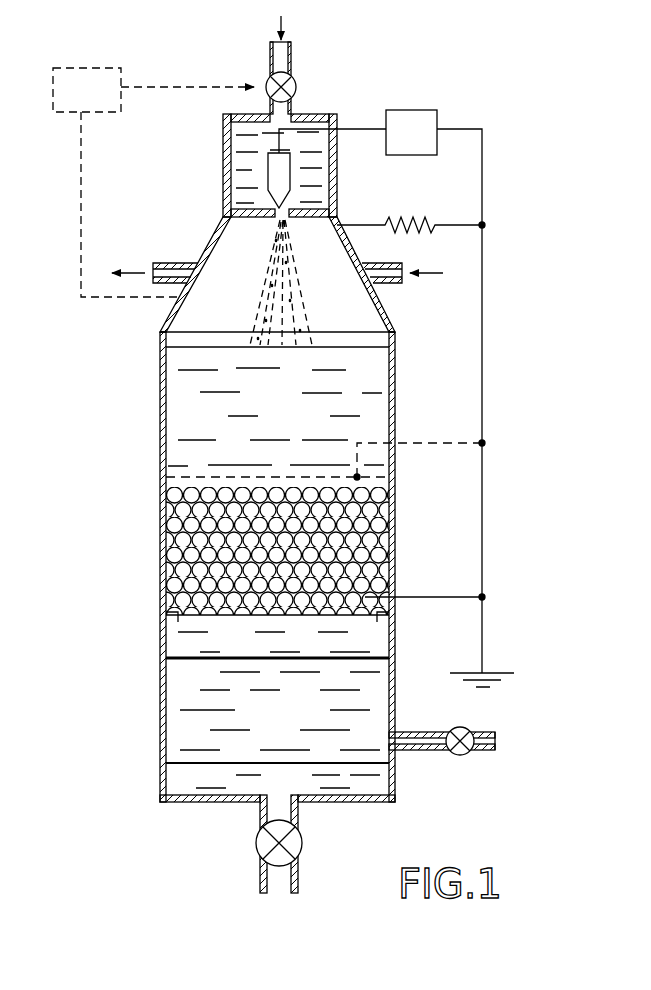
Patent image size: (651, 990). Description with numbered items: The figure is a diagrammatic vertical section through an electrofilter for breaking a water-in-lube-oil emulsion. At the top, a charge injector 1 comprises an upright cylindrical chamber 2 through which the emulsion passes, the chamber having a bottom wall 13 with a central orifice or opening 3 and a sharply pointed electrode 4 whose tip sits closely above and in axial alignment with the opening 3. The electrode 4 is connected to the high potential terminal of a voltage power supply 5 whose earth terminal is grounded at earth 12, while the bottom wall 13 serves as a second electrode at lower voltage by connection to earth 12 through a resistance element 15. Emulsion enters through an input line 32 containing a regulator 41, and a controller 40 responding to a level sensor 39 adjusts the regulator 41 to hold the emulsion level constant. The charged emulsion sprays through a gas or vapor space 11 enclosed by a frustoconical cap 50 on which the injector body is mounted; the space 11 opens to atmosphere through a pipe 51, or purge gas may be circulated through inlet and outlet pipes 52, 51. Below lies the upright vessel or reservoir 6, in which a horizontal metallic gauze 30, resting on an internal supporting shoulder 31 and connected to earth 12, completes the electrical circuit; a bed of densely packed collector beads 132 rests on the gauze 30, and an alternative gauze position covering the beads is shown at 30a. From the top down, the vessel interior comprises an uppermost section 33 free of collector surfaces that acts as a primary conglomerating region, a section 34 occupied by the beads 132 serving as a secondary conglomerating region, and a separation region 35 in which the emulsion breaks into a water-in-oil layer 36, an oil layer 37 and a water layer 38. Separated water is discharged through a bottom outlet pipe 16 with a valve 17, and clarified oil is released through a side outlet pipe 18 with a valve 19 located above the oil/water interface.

The charge injector 1 is at (216, 160).
The chamber 2 is at (228, 221).
The central orifice or opening 3 is at (285, 222).
The pointed electrode 4 is at (286, 183).
The voltage power supply 5 is at (425, 112).
The vessel or reservoir 6 is at (165, 600).
The gas or vapor space 11 is at (349, 317).
The earth 12 is at (497, 668).
The bottom wall 13 is at (256, 222).
The resistance element 15 is at (415, 222).
The outlet pipe 16 is at (258, 810).
The valve 17 is at (300, 850).
The outlet pipe 18 is at (486, 748).
The valve 19 is at (459, 758).
The metallic gauze 30 is at (287, 616).
The gauze electrode alternative location 30a is at (232, 477).
The internal supporting shoulder 31 is at (382, 626).
The input line 32 is at (292, 48).
The uppermost section 33 is at (296, 408).
The section occupied by beads 34 is at (386, 494).
The separation region 35 is at (193, 723).
The water-in-oil layer 36 is at (247, 651).
The oil layer 37 is at (196, 702).
The water layer 38 is at (226, 774).
The level sensor 39 is at (182, 343).
The controller 40 is at (94, 104).
The regulator 41 is at (298, 82).
The frustoconical shaped cap 50 is at (196, 263).
The pipe 51 is at (156, 262).
The inlet pipe 52 is at (397, 263).
The collector beads 132 is at (173, 557).